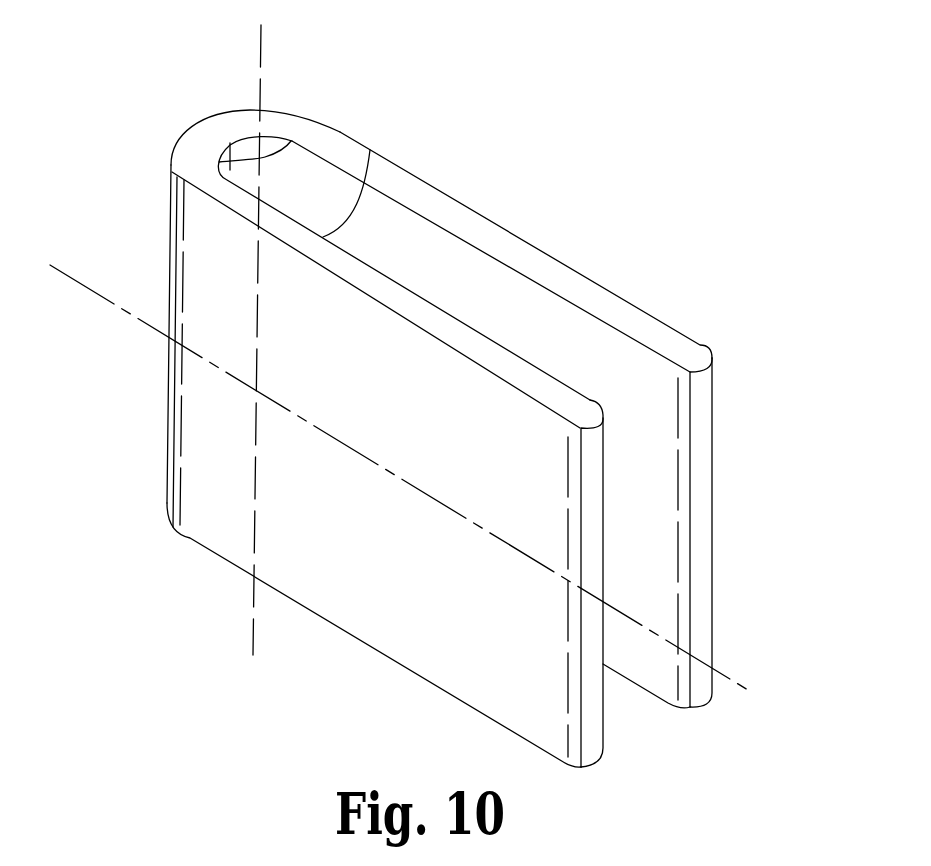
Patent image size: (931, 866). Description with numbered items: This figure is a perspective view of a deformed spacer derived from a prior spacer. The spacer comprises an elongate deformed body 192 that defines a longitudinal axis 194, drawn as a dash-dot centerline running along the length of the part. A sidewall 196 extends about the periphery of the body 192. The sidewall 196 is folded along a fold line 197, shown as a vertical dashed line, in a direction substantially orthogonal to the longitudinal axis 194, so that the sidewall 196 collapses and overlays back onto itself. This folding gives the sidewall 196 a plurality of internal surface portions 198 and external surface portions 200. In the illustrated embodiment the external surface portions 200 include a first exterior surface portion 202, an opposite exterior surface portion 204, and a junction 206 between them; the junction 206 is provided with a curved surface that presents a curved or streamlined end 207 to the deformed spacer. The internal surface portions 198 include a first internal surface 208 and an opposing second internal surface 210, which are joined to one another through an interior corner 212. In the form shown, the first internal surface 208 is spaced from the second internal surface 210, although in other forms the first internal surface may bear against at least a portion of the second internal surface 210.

The elongate deformed body 192 is at (566, 420).
The longitudinal axis 194 is at (745, 682).
The sidewall 196 is at (203, 413).
The fold line 197 is at (262, 52).
The internal surface portions 198 is at (467, 287).
The external surface portions 200 is at (328, 469).
The first exterior surface portion 202 is at (473, 643).
The opposite exterior surface portion 204 is at (633, 303).
The junction 206 is at (211, 123).
The curved or streamlined end 207 is at (176, 140).
The first internal surface 208 is at (370, 151).
The second internal surface 210 is at (570, 318).
The interior corner 212 is at (275, 156).